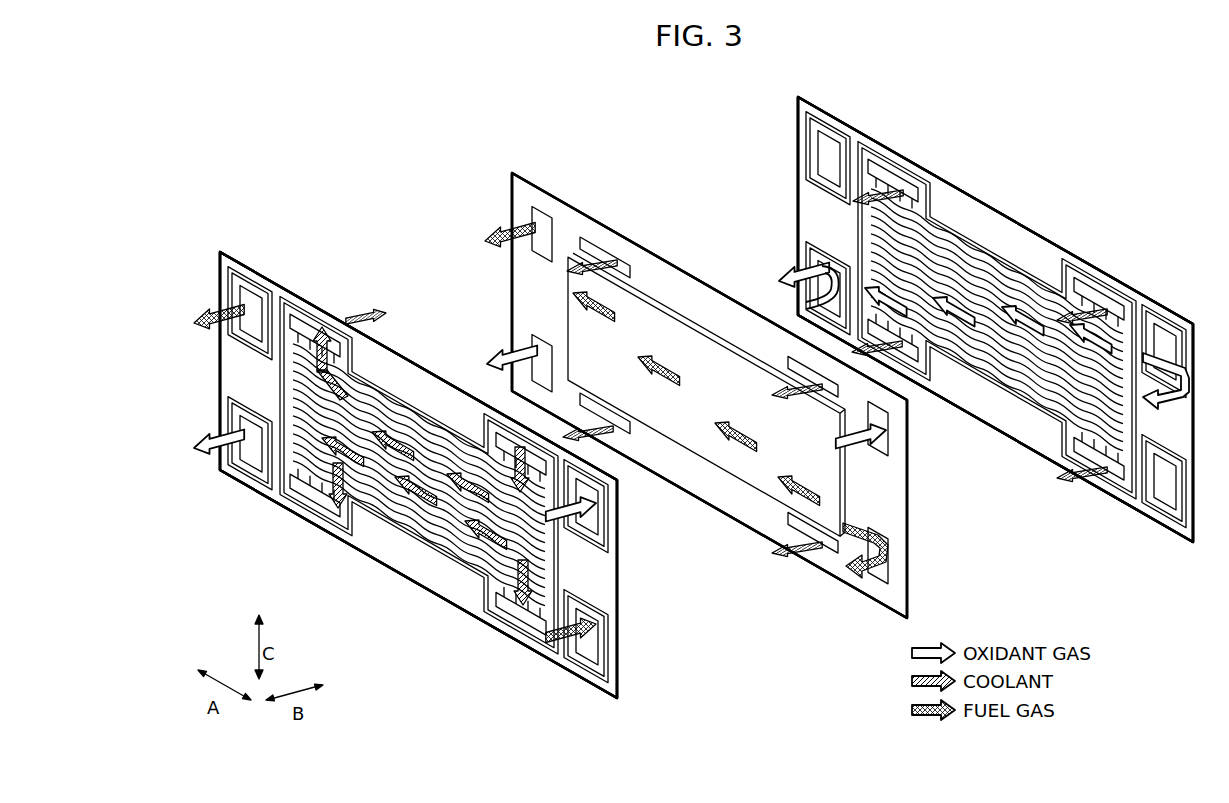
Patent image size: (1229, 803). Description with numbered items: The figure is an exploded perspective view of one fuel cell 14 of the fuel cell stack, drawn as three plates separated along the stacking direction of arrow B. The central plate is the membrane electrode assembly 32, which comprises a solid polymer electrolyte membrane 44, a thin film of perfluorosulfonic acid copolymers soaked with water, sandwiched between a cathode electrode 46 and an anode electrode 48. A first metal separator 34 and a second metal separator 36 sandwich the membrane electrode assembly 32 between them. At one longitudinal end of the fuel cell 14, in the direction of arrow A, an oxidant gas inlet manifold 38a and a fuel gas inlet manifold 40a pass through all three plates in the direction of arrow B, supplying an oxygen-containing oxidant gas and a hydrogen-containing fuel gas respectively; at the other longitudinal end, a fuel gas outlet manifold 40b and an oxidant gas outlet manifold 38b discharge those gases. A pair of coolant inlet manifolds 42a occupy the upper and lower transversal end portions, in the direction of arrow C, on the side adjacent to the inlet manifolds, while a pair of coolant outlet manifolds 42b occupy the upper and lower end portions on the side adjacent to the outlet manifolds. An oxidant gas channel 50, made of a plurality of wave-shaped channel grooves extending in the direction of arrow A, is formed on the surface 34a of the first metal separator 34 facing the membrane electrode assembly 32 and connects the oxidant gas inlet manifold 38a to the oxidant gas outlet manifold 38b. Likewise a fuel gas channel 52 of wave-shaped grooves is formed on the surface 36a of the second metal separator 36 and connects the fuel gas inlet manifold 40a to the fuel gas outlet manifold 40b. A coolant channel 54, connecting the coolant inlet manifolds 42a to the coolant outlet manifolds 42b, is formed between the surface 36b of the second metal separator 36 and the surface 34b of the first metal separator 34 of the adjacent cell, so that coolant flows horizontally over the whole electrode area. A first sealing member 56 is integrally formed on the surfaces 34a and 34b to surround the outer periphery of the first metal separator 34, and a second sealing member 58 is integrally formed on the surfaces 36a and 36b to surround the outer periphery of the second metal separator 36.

The fuel cell 14 is at (716, 96).
The membrane electrode assembly 32 is at (523, 175).
The first metal separator 34 is at (845, 123).
The surface of the first metal separator 34a is at (1030, 418).
The surface of the first metal separator 34b is at (1042, 425).
The second metal separator 36 is at (238, 257).
The surface of the second metal separator 36a is at (462, 575).
The surface of the second metal separator 36b is at (455, 575).
The oxidant gas inlet manifold 38a is at (588, 523).
The oxidant gas outlet manifold 38b is at (252, 458).
The fuel gas inlet manifold 40a is at (590, 645).
The fuel gas outlet manifold 40b is at (246, 298).
The coolant inlet manifolds 42a is at (543, 435).
The coolant outlet manifolds 42b is at (312, 330).
The solid polymer electrolyte membrane 44 is at (880, 595).
The cathode electrode 46 is at (685, 340).
The anode electrode 48 is at (747, 465).
The oxidant gas channel 50 is at (975, 340).
The fuel gas channel 52 is at (375, 400).
The coolant channel 54 is at (403, 505).
The first sealing member 56 is at (950, 227).
The second sealing member 58 is at (299, 300).